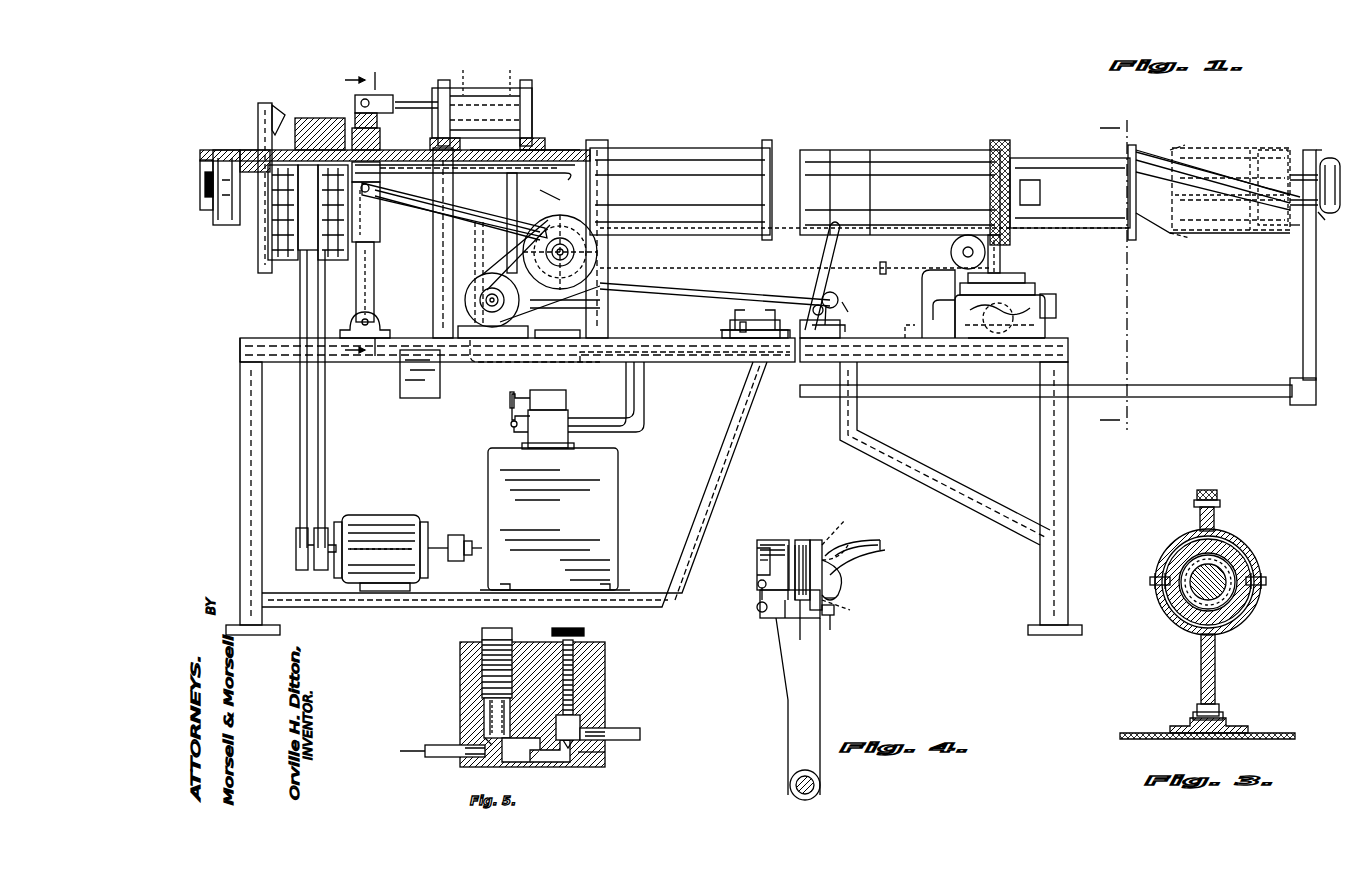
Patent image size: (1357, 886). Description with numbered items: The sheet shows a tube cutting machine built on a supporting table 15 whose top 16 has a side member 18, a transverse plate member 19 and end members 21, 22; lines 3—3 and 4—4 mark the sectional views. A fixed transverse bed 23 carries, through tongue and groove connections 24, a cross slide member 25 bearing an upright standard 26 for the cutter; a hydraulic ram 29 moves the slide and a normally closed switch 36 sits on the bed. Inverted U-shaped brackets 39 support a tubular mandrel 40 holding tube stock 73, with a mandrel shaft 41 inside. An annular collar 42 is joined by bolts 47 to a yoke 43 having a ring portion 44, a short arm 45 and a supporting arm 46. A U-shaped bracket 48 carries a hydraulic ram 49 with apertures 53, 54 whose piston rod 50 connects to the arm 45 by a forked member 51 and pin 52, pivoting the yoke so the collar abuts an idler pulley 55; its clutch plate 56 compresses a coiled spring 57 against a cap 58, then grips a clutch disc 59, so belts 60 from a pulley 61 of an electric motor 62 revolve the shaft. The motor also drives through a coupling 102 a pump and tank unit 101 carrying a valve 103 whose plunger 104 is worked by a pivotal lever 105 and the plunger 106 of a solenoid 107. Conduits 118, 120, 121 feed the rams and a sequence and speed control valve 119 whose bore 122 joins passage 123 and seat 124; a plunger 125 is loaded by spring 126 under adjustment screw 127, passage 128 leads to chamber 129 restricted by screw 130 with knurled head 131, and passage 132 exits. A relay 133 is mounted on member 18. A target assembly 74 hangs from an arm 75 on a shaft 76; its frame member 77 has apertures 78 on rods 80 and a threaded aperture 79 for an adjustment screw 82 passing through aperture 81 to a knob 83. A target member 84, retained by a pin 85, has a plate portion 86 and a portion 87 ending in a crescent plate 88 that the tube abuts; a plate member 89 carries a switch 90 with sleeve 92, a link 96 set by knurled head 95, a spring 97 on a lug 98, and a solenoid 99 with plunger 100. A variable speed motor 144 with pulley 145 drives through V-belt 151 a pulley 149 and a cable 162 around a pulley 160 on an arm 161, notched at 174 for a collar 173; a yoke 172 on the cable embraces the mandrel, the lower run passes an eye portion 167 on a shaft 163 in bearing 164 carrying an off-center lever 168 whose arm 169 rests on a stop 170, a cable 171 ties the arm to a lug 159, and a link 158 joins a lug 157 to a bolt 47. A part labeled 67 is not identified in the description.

In FIG. 1, the section line 3— 3 is at (362, 215).
In FIG. 1, the section line 4— 4 is at (1118, 275).
In FIG. 1, the supporting table 15 is at (1068, 490).
In FIG. 1, the top 16 is at (650, 340).
In FIG. 1, the longitudinal side member 18 is at (275, 372).
In FIG. 1, the transverse plate member 19 is at (392, 330).
In FIG. 3, the transverse plate member 19 is at (1265, 732).
In FIG. 1, the transverse end member 21 is at (1066, 340).
In FIG. 1, the transverse end member 22 is at (240, 340).
In FIG. 1, the fixed transverse bed 23 is at (965, 345).
In FIG. 1, the tongue and groove connections 24 is at (1000, 314).
In FIG. 1, the cross slide member 25 is at (1036, 290).
In FIG. 1, the upright standard 26 is at (1001, 260).
In FIG. 1, the double acting hydraulic ram 29 is at (1027, 278).
In FIG. 1, the normally closed electrical push button switch 36 is at (1056, 302).
In FIG. 1, the inverted U-shaped brackets 39 is at (432, 262).
In FIG. 1, the tubular mandrel 40 is at (638, 148).
In FIG. 1, the mandrel shaft 41 is at (560, 148).
In FIG. 3, the mandrel shaft 41 is at (1245, 610).
In FIG. 1, the annular collar 42 is at (380, 140).
In FIG. 3, the annular collar 42 is at (1175, 620).
In FIG. 1, the yoke 43 is at (355, 270).
In FIG. 3, the yoke 43 is at (1255, 550).
In FIG. 1, the annular ring portion 44 is at (380, 225).
In FIG. 3, the annular ring portion 44 is at (1165, 545).
In FIG. 1, the short arm 45 is at (378, 122).
In FIG. 3, the short arm 45 is at (1215, 518).
In FIG. 1, the supporting arm 46 is at (375, 288).
In FIG. 3, the supporting arm 46 is at (1215, 672).
In FIG. 1, the bolts 47 is at (395, 186).
In FIG. 3, the bolts 47 is at (1150, 581).
In FIG. 1, the U-shaped bracket 48 is at (540, 148).
In FIG. 1, the double-acting hydraulic ram 49 is at (535, 95).
In FIG. 1, the piston rod 50 is at (415, 100).
In FIG. 1, the forked connection member 51 is at (383, 96).
In FIG. 3, the forked connection member 51 is at (1215, 492).
In FIG. 1, the pin 52 is at (360, 103).
In FIG. 3, the pin 52 is at (1220, 504).
In FIG. 1, the aperture 53 is at (463, 75).
In FIG. 1, the aperture 54 is at (513, 75).
In FIG. 1, the idler pulley 55 is at (290, 262).
In FIG. 1, the clutch plate 56 is at (278, 112).
In FIG. 1, the coiled spring 57 is at (258, 150).
In FIG. 1, the cap 58 is at (212, 150).
In FIG. 1, the clutch disc 59 is at (258, 112).
In FIG. 1, the endless driving belts 60 is at (300, 318).
In FIG. 1, the pulley 61 is at (296, 553).
In FIG. 1, the electric motor 62 is at (380, 515).
In FIG. 1, the coupling 67 is at (990, 180).
In FIG. 1, the tube stock 73 is at (915, 148).
In FIG. 1, the target assembly 74 is at (1232, 148).
In FIG. 4, the target assembly 74 is at (765, 540).
In FIG. 1, the arm 75 is at (1316, 296).
In FIG. 4, the arm 75 is at (822, 688).
In FIG. 1, the shaft 76 is at (1178, 400).
In FIG. 4, the shaft 76 is at (790, 787).
In FIG. 1, the plate-like frame member 77 is at (1265, 150).
In FIG. 4, the plate-like frame member 77 is at (822, 540).
In FIG. 1, the unthreaded apertures 78 is at (1197, 183).
In FIG. 4, the unthreaded apertures 78 is at (848, 568).
In FIG. 1, the threaded aperture 79 is at (1232, 193).
In FIG. 4, the threaded aperture 79 is at (848, 538).
In FIG. 1, the rods 80 is at (1300, 185).
In FIG. 1, the aperture 81 is at (1327, 134).
In FIG. 1, the adjustment screw 82 is at (1327, 221).
In FIG. 1, the knob 83 is at (1331, 173).
In FIG. 4, the knob 83 is at (848, 577).
In FIG. 1, the target member 84 is at (1150, 150).
In FIG. 4, the target member 84 is at (836, 610).
In FIG. 1, the fixed pin 85 is at (1288, 228).
In FIG. 4, the fixed pin 85 is at (832, 625).
In FIG. 4, the flat plate portion 86 is at (773, 618).
In FIG. 1, the portion 87 is at (1140, 218).
In FIG. 4, the portion 87 is at (840, 600).
In FIG. 1, the crescent-shaped plate member 88 is at (1128, 190).
In FIG. 4, the crescent-shaped plate member 88 is at (882, 540).
In FIG. 4, the rectangular plate member 89 is at (757, 552).
In FIG. 4, the normally open electrical push button switch 90 is at (760, 567).
In FIG. 4, the sleeve 92 is at (758, 585).
In FIG. 4, the knurled head 95 is at (757, 612).
In FIG. 4, the link 96 is at (760, 598).
In FIG. 4, the coiled spring 97 is at (787, 618).
In FIG. 4, the lug 98 is at (800, 580).
In FIG. 4, the solenoid 99 is at (800, 540).
In FIG. 4, the plunger 100 is at (807, 629).
In FIG. 1, the hydraulic pump and tank unit 101 is at (615, 525).
In FIG. 1, the coupling 102 is at (458, 535).
In FIG. 1, the four-way spring loaded two-position valve 103 is at (570, 415).
In FIG. 1, the plunger 104 is at (512, 430).
In FIG. 1, the pivotal lever 105 is at (510, 400).
In FIG. 1, the plunger 106 is at (518, 394).
In FIG. 1, the solenoid 107 is at (562, 392).
In FIG. 1, the conduit 118 is at (626, 385).
In FIG. 5, the conduit 118 is at (440, 762).
In FIG. 1, the combination sequence and speed control valve 119 is at (775, 362).
In FIG. 5, the combination sequence and speed control valve 119 is at (605, 668).
In FIG. 1, the conduit 120 is at (861, 333).
In FIG. 5, the conduit 120 is at (628, 745).
In FIG. 1, the conduit 121 is at (645, 410).
In FIG. 5, the bore 122 is at (480, 730).
In FIG. 5, the passage 123 is at (480, 760).
In FIG. 5, the bevelled annular seat 124 is at (505, 762).
In FIG. 5, the plunger 125 is at (483, 716).
In FIG. 5, the compression spring 126 is at (480, 680).
In FIG. 1, the adjustment screw 127 is at (751, 308).
In FIG. 5, the adjustment screw 127 is at (480, 632).
In FIG. 5, the passage 128 is at (545, 762).
In FIG. 5, the chamber 129 is at (582, 725).
In FIG. 5, the adjustment screw 130 is at (580, 660).
In FIG. 1, the knurled head 131 is at (782, 308).
In FIG. 5, the knurled head 131 is at (555, 628).
In FIG. 5, the passage 132 is at (605, 767).
In FIG. 1, the solenoid actuated relay 133 is at (400, 382).
In FIG. 1, the electric motor 144 is at (492, 293).
In FIG. 1, the pulley 145 is at (526, 350).
In FIG. 1, the pulley 149 is at (541, 271).
In FIG. 1, the driving V-belt 151 is at (528, 318).
In FIG. 1, the upstanding lug 157 is at (565, 205).
In FIG. 1, the link 158 is at (495, 210).
In FIG. 1, the downwardly projecting lug 159 is at (605, 304).
In FIG. 1, the pulley 160 is at (951, 250).
In FIG. 1, the arm 161 is at (955, 290).
In FIG. 1, the endless cable 162 is at (765, 283).
In FIG. 1, the transverse shaft 163 is at (812, 301).
In FIG. 1, the bearing 164 is at (848, 290).
In FIG. 1, the eye portion 167 is at (818, 298).
In FIG. 1, the off-center lever 168 is at (840, 248).
In FIG. 1, the arm 169 is at (861, 299).
In FIG. 1, the stop 170 is at (847, 316).
In FIG. 1, the cable 171 is at (715, 292).
In FIG. 1, the yoke 172 is at (765, 142).
In FIG. 1, the collar 173 is at (883, 262).
In FIG. 1, the notch 174 is at (1001, 245).